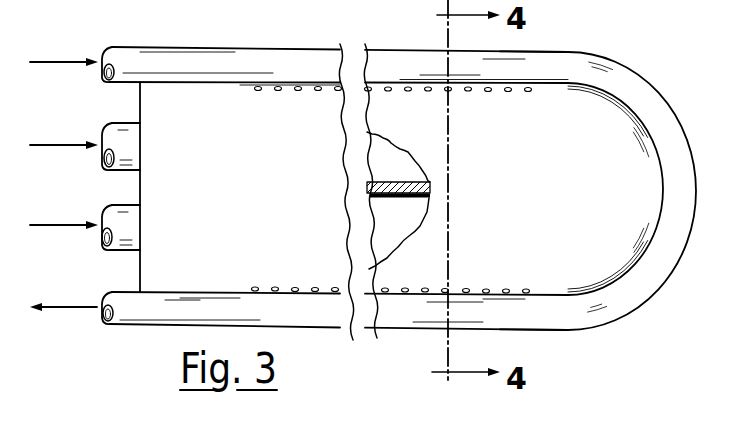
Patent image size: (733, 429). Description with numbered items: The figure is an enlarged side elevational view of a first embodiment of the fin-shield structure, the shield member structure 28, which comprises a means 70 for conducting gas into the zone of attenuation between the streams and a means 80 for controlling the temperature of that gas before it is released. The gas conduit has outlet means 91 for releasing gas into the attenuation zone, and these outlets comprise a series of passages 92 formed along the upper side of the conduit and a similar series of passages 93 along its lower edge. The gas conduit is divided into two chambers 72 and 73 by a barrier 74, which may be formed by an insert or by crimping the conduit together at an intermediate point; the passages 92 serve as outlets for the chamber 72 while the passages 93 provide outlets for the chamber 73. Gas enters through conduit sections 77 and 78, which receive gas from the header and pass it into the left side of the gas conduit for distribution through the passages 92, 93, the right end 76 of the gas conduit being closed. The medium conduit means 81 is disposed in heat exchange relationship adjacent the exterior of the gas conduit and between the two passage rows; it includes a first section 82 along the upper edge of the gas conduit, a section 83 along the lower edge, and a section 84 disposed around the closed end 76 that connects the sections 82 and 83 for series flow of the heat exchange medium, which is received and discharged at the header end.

The means for conducting gas 70 is at (213, 140).
The means for controlling the temperature of the gas 80 is at (311, 46).
The first section of medium exchange conduit 82 is at (108, 47).
The conduit section 77 is at (110, 124).
The conduit section 78 is at (108, 205).
The section of medium exchange conduit 83 is at (110, 292).
The shield member structure 28 is at (647, 69).
The medium conduit means 81 is at (560, 58).
The closed end of the gas conduit 76 is at (642, 197).
The section of medium exchange conduit 84 is at (685, 208).
The series of passages 92 is at (318, 90).
The series of passages 93 is at (337, 287).
The outlet means 91 is at (540, 95).
The chamber 72 is at (390, 165).
The barrier 74 is at (405, 182).
The chamber 73 is at (397, 227).